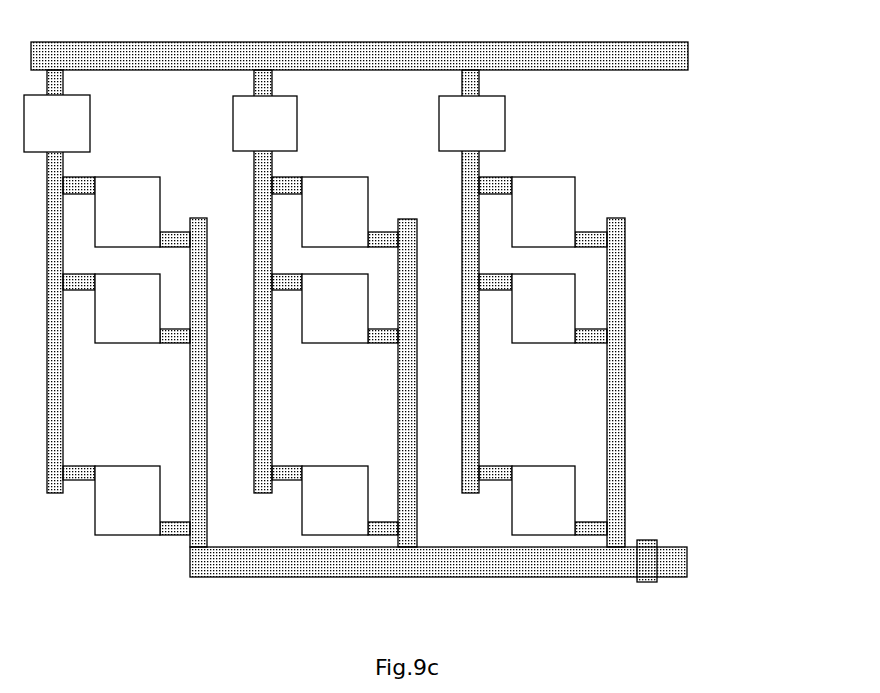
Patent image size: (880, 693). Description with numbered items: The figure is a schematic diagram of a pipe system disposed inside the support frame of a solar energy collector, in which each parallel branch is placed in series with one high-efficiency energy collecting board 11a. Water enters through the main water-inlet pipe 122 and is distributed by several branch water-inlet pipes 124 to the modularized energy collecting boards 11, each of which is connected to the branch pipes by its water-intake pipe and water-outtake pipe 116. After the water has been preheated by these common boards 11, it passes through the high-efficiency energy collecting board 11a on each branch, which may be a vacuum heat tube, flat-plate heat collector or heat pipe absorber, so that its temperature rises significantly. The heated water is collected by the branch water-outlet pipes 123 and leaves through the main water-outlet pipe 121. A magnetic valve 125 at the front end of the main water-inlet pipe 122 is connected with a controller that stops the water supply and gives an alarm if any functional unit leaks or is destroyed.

The main water-outlet pipe 121 is at (642, 55).
The high-efficiency energy collecting board 11a is at (498, 137).
The modularized energy collecting board 11 is at (544, 237).
The water-intake pipe and water-outtake pipe 116 is at (498, 288).
The branch water-outlet pipe 123 is at (483, 410).
The branch water-inlet pipe 124 is at (624, 478).
The main water-inlet pipe 122 is at (576, 562).
The magnetic valve 125 is at (658, 560).